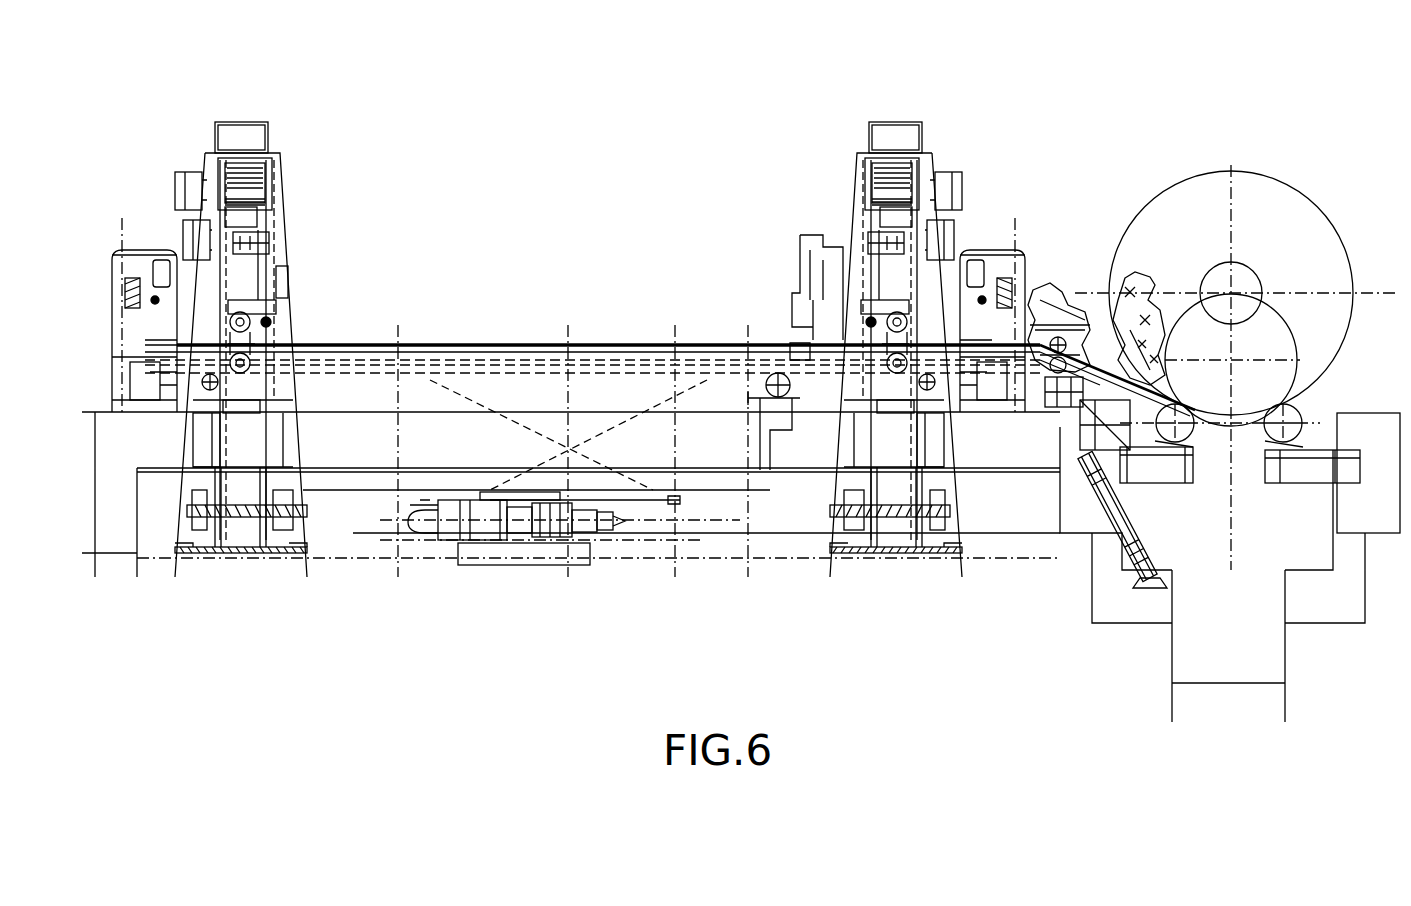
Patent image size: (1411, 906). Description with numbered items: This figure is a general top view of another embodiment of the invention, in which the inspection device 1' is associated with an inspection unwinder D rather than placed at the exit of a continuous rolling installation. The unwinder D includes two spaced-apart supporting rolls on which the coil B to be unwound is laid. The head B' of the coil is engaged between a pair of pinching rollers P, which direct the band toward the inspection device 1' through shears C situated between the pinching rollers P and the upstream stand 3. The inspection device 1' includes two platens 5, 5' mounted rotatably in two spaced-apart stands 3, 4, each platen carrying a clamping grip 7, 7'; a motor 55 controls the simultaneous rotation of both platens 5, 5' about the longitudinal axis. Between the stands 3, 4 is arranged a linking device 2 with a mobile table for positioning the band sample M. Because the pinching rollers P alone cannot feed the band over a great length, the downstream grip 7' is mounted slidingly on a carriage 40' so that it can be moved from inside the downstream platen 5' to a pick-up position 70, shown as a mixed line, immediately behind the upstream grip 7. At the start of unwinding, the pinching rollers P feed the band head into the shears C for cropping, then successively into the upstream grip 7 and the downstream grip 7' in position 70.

The inspection device 1' is at (564, 379).
The linking device 2 is at (518, 402).
The upstream stand 3 is at (903, 123).
The downstream stand 4 is at (243, 122).
The upstream platen 5 is at (850, 206).
The downstream platen 5' is at (284, 219).
The upstream clamping grip 7 is at (849, 298).
The downstream clamping grip 7' is at (275, 320).
The carriage 40' is at (559, 275).
The motor 55 is at (488, 548).
The band pick-up position 70 is at (788, 340).
The band sample M is at (438, 340).
The shears C is at (993, 242).
The pinching rollers P is at (1057, 270).
The coil B is at (1235, 367).
The coil head B' is at (1124, 283).
The inspection unwinder D is at (1320, 428).